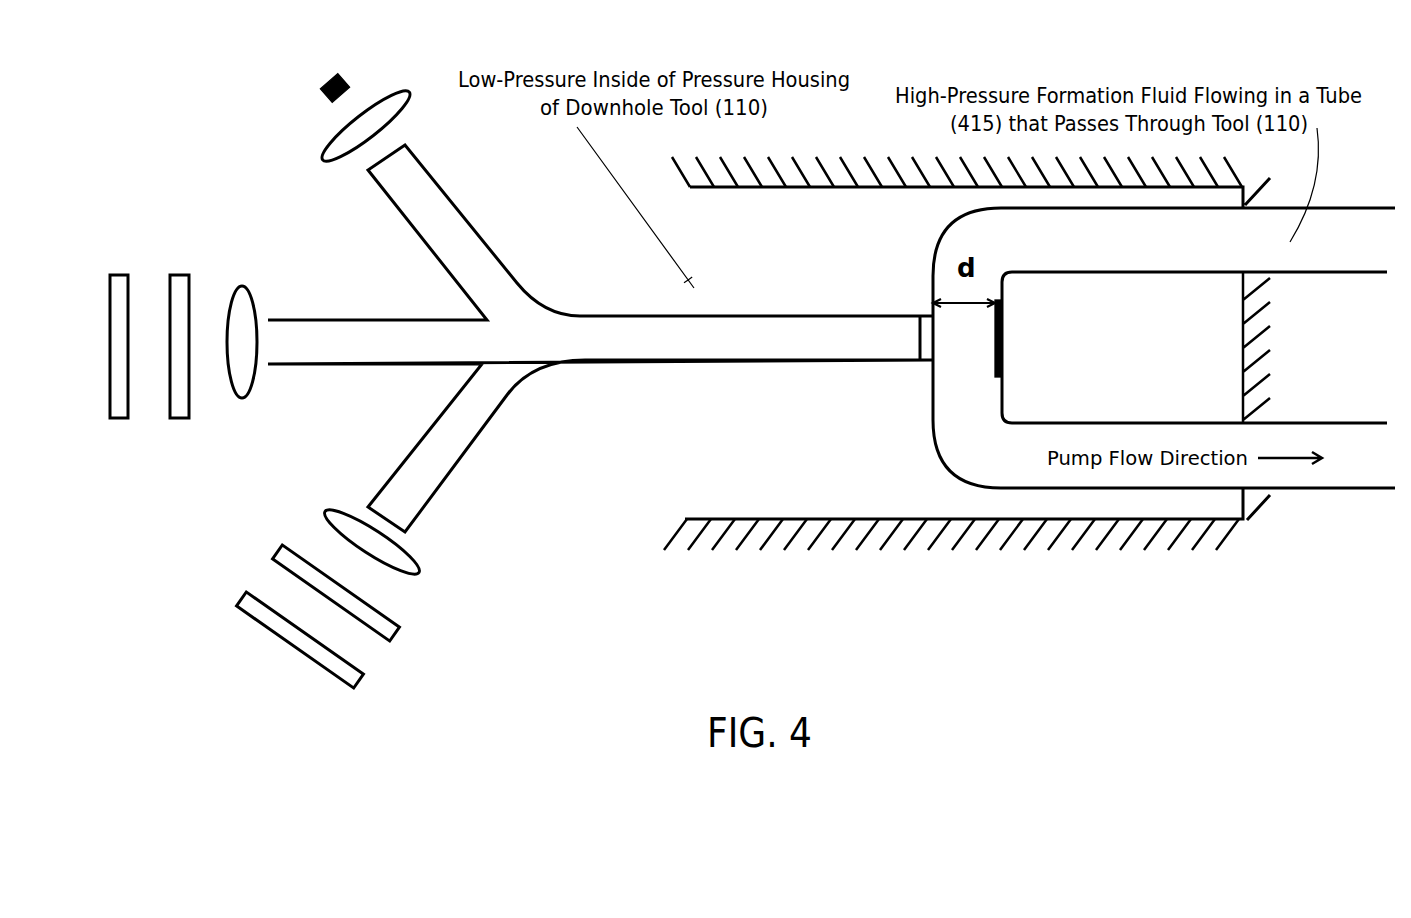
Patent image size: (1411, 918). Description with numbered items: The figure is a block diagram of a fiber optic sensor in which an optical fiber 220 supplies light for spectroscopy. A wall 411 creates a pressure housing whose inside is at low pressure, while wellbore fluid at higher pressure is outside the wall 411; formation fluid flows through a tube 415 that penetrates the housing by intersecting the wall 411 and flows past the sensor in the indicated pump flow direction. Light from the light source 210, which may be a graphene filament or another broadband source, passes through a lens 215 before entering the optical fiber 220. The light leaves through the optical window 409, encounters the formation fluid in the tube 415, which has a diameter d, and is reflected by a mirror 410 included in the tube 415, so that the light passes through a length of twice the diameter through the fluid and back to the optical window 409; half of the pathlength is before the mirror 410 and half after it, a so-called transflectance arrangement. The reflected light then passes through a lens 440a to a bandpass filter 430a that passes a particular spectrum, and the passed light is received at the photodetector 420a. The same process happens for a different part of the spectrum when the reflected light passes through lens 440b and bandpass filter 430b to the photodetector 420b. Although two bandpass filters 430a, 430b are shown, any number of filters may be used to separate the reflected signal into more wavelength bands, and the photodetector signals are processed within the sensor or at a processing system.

The light source 210 is at (304, 103).
The lens 215 is at (313, 182).
The optical fiber 220 is at (581, 301).
The optical window 409 is at (904, 337).
The mirror 410 is at (981, 356).
The wall 411 is at (1124, 583).
The tube 415 is at (944, 237).
The photodetector 420a is at (123, 445).
The bandpass filter 430a is at (170, 444).
The lens 440a is at (245, 423).
The lens 440b is at (443, 568).
The bandpass filter 430b is at (415, 643).
The photodetector 420b is at (412, 693).